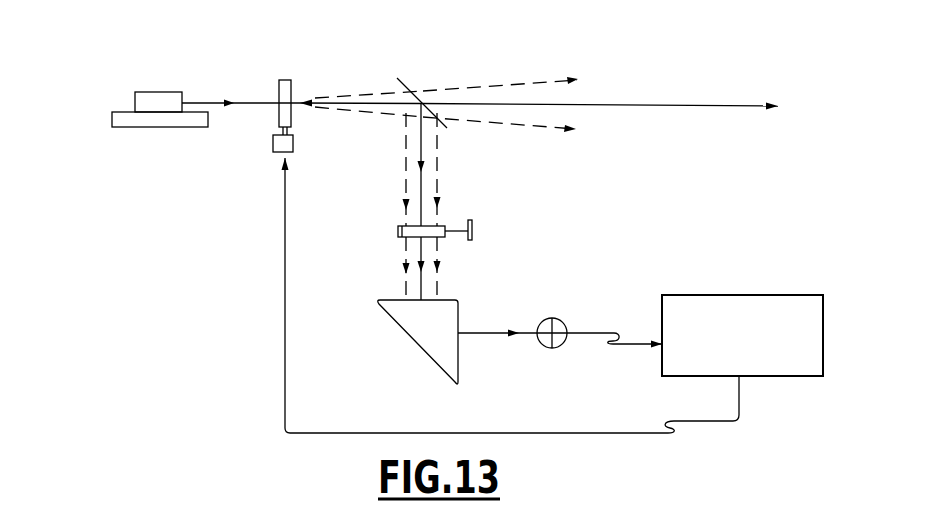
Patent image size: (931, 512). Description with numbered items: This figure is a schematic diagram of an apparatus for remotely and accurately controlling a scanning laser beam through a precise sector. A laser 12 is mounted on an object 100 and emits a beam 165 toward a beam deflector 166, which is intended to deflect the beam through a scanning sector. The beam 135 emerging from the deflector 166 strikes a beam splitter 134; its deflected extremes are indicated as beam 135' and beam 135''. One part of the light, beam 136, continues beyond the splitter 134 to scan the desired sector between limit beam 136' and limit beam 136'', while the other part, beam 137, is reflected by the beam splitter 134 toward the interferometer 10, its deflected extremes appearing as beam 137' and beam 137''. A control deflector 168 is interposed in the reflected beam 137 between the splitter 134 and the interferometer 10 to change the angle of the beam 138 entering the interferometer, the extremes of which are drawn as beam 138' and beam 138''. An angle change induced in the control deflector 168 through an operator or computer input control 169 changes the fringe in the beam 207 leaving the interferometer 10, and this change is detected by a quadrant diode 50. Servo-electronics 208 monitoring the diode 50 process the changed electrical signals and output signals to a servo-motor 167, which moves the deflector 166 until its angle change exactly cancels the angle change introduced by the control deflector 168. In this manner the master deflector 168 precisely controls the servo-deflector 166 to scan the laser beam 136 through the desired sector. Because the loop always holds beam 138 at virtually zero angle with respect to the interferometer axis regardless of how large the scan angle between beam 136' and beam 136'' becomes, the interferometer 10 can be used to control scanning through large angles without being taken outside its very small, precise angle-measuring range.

The laser 12 is at (162, 92).
The object 100 is at (178, 127).
The beam 165 is at (250, 103).
The beam deflector 166 is at (279, 93).
The servo-motor 167 is at (273, 144).
The beam 135 is at (360, 80).
The beam 135' is at (369, 64).
The beam 135'' is at (369, 134).
The beam splitter 134 is at (408, 93).
The beam 136 is at (599, 84).
The beam 136' is at (520, 62).
The beam 136'' is at (530, 143).
The beam 137 is at (456, 164).
The beam 137' is at (380, 169).
The beam 137'' is at (470, 169).
The control deflector 168 is at (444, 226).
The operator or computer input control 169 is at (472, 231).
The beam 138 is at (387, 267).
The beam 138' is at (379, 268).
The beam 138'' is at (475, 268).
The interferometer 10 is at (413, 340).
The quadrant diode 50 is at (555, 318).
The beam 207 is at (487, 333).
The servo-electronics 208 is at (708, 295).